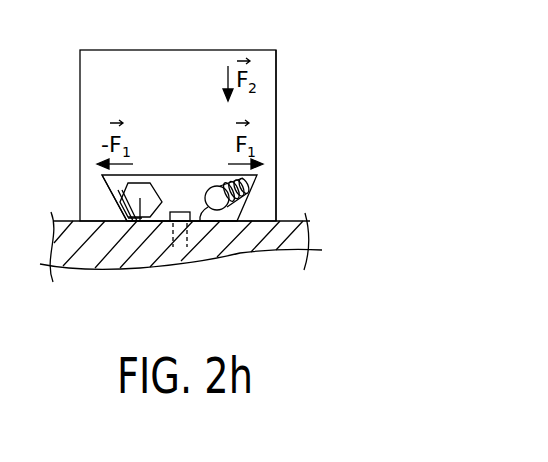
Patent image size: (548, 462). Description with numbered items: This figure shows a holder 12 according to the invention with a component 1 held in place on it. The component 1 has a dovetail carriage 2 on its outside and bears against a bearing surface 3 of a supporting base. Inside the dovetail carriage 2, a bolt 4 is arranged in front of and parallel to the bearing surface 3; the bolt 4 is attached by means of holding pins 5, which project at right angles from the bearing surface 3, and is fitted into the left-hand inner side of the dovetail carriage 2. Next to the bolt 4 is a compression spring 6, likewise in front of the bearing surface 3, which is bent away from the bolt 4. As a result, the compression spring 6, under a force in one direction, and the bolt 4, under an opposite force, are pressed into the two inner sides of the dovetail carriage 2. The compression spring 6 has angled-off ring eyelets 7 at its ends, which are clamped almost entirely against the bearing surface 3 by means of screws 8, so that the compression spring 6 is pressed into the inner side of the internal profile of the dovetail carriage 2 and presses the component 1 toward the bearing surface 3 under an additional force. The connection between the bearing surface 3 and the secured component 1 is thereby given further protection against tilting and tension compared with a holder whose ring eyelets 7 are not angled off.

The component 1 is at (268, 57).
The dovetail carriage 2 is at (270, 123).
The bearing surface 3 is at (273, 248).
The bolt 4 is at (128, 199).
The holding pins 5 is at (112, 223).
The compression spring 6 is at (257, 190).
The ring eyelets 7 is at (206, 212).
The screw 8 is at (140, 221).
The holder 12 is at (172, 198).